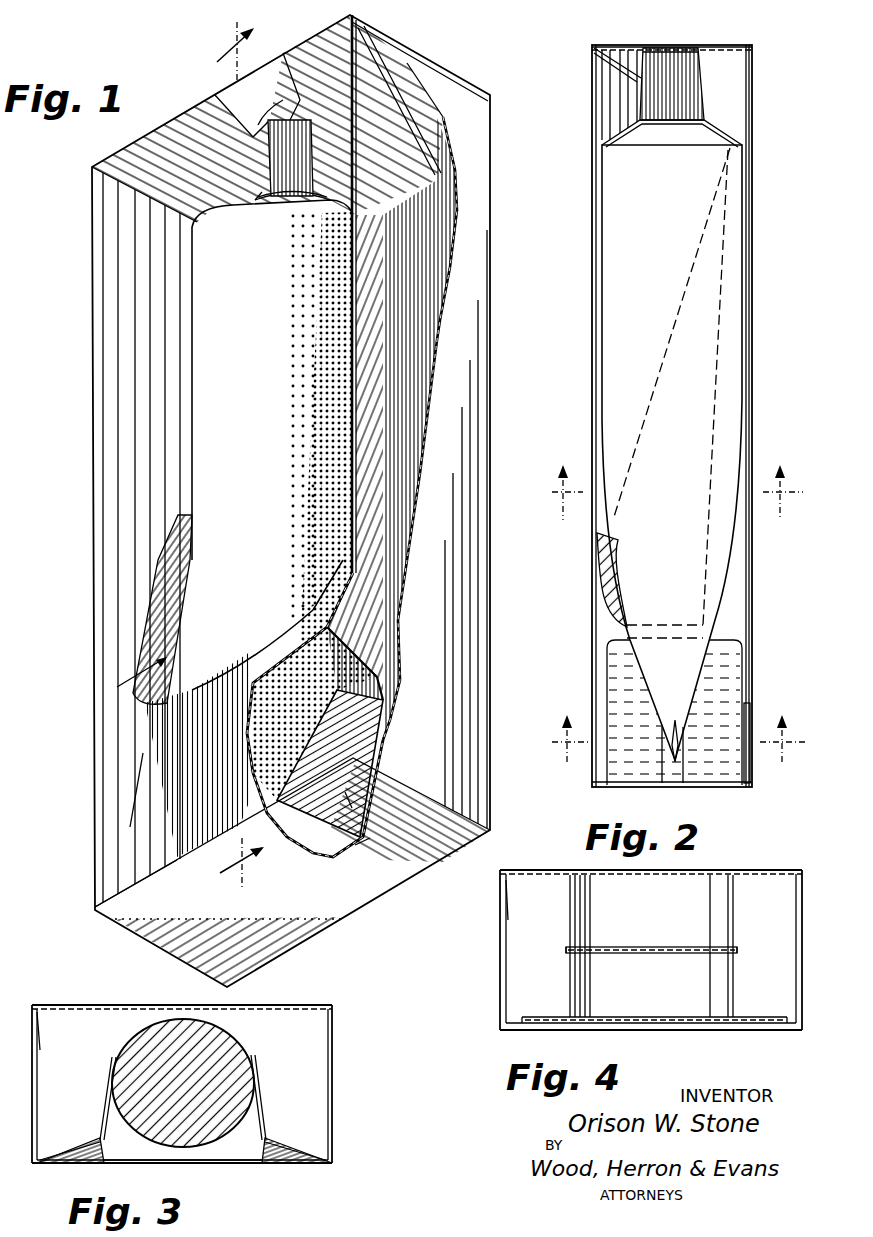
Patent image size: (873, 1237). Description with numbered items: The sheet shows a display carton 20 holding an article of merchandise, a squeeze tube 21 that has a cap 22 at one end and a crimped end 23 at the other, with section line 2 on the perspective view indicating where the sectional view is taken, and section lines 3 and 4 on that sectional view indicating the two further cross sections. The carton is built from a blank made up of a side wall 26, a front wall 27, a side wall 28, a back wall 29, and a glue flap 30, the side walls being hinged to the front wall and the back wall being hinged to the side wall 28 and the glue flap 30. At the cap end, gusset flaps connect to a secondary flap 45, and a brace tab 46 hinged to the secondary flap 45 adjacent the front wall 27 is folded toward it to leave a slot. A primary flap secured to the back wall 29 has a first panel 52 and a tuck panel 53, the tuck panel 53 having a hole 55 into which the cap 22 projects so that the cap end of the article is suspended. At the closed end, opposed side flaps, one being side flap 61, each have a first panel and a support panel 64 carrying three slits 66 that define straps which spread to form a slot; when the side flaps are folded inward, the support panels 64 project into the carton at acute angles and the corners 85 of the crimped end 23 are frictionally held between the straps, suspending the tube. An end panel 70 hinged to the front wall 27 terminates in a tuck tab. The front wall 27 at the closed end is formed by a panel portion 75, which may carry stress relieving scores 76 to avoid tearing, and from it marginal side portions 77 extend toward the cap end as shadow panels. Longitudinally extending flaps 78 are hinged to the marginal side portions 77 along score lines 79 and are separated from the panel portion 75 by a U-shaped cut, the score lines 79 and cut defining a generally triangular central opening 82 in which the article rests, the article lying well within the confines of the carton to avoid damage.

In FIG. 1, the section line 2— 2 is at (240, 451).
In FIG. 2, the section line 3— 3 is at (668, 492).
In FIG. 2, the section line 4— 4 is at (669, 740).
In FIG. 1, the carton 20 is at (78, 398).
In FIG. 2, the carton 20 is at (777, 88).
In FIG. 1, the squeeze tube 21 is at (272, 441).
In FIG. 2, the squeeze tube 21 is at (672, 440).
In FIG. 3, the squeeze tube 21 is at (215, 1050).
In FIG. 1, the cap 22 is at (276, 200).
In FIG. 2, the cap 22 is at (690, 84).
In FIG. 1, the crimped end 23 is at (315, 855).
In FIG. 2, the crimped end 23 is at (680, 752).
In FIG. 4, the crimped end 23 is at (632, 948).
In FIG. 3, the side wall 26 is at (40, 1080).
In FIG. 4, the side wall 26 is at (506, 952).
In FIG. 1, the front wall 27 is at (120, 763).
In FIG. 3, the front wall 27 is at (270, 1165).
In FIG. 4, the front wall 27 is at (700, 1030).
In FIG. 1, the side wall 28 is at (478, 326).
In FIG. 3, the side wall 28 is at (332, 1092).
In FIG. 4, the side wall 28 is at (796, 1014).
In FIG. 2, the back wall 29 is at (752, 251).
In FIG. 3, the back wall 29 is at (258, 1004).
In FIG. 4, the back wall 29 is at (580, 872).
In FIG. 3, the glue flap 30 is at (42, 1040).
In FIG. 4, the glue flap 30 is at (518, 912).
In FIG. 1, the secondary flap 45 is at (266, 95).
In FIG. 2, the secondary flap 45 is at (636, 47).
In FIG. 1, the brace tab 46 is at (256, 112).
In FIG. 1, the first panel 52 is at (372, 30).
In FIG. 2, the first panel 52 is at (700, 42).
In FIG. 1, the tuck panel 53 is at (200, 140).
In FIG. 1, the hole 55 is at (258, 186).
In FIG. 1, the side flap 61 is at (392, 830).
In FIG. 1, the support panel 64 is at (330, 763).
In FIG. 2, the support panel 64 is at (640, 697).
In FIG. 4, the support panel 64 is at (572, 927).
In FIG. 1, the slits 66 is at (346, 788).
In FIG. 2, the slits 66 is at (683, 786).
In FIG. 4, the slits 66 is at (572, 958).
In FIG. 1, the end panel 70 is at (352, 898).
In FIG. 1, the panel portion 75 is at (195, 754).
In FIG. 3, the panel portion 75 is at (190, 1163).
In FIG. 1, the stress relieving scores 76 is at (138, 775).
In FIG. 1, the marginal side portions 77 is at (126, 312).
In FIG. 2, the marginal side portions 77 is at (605, 113).
In FIG. 3, the marginal side portions 77 is at (282, 1150).
In FIG. 1, the longitudinally extending flaps 78 is at (172, 630).
In FIG. 2, the longitudinally extending flaps 78 is at (715, 440).
In FIG. 3, the longitudinally extending flaps 78 is at (112, 1112).
In FIG. 1, the score lines 79 is at (153, 608).
In FIG. 2, the score lines 79 is at (652, 392).
In FIG. 3, the score lines 79 is at (100, 1140).
In FIG. 1, the central opening 82 is at (136, 686).
In FIG. 1, the corners 85 is at (369, 850).